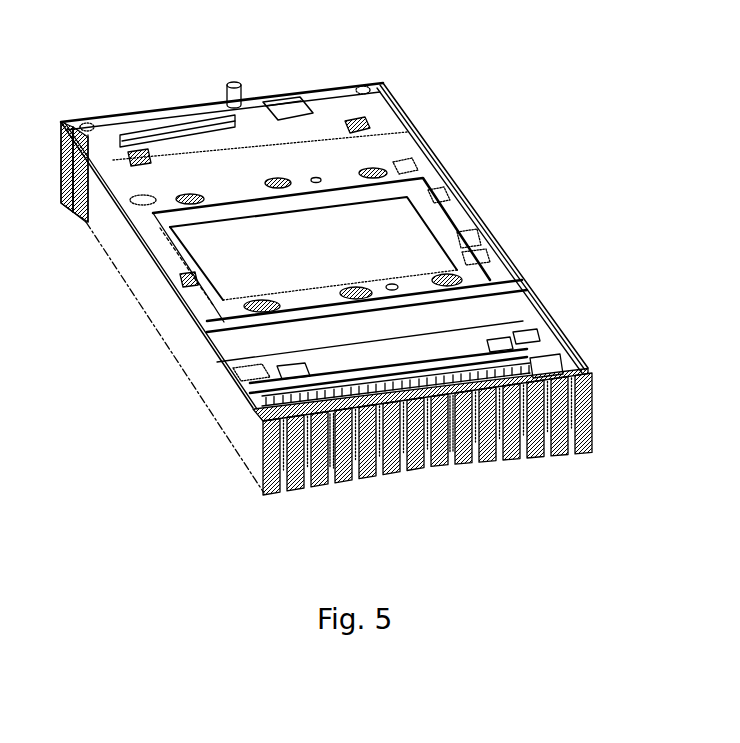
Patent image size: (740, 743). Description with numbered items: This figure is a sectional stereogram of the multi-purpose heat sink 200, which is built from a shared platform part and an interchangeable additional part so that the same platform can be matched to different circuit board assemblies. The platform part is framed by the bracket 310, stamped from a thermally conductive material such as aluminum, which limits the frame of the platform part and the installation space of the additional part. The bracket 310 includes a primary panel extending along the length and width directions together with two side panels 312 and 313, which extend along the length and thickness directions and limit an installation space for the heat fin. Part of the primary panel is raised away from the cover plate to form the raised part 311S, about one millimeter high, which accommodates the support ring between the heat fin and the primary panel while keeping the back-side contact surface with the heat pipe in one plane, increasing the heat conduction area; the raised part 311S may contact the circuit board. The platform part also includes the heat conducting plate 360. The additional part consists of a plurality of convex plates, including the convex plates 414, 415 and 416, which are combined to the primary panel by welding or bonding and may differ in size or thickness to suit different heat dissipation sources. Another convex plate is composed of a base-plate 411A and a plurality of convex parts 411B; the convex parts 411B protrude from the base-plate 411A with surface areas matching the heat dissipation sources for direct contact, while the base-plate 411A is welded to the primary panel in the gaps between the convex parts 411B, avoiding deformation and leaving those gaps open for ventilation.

The multi-purpose heat sink 200 is at (623, 84).
The bracket 310 is at (390, 97).
The raised part 311S is at (487, 260).
The side panel 312 is at (227, 408).
The side panel 313 is at (590, 410).
The heat conducting plate 360 is at (393, 240).
The convex plate 414 is at (142, 160).
The convex plate 415 is at (160, 130).
The convex plate 416 is at (290, 100).
The base-plate 411A is at (460, 437).
The convex parts 411B is at (330, 450).